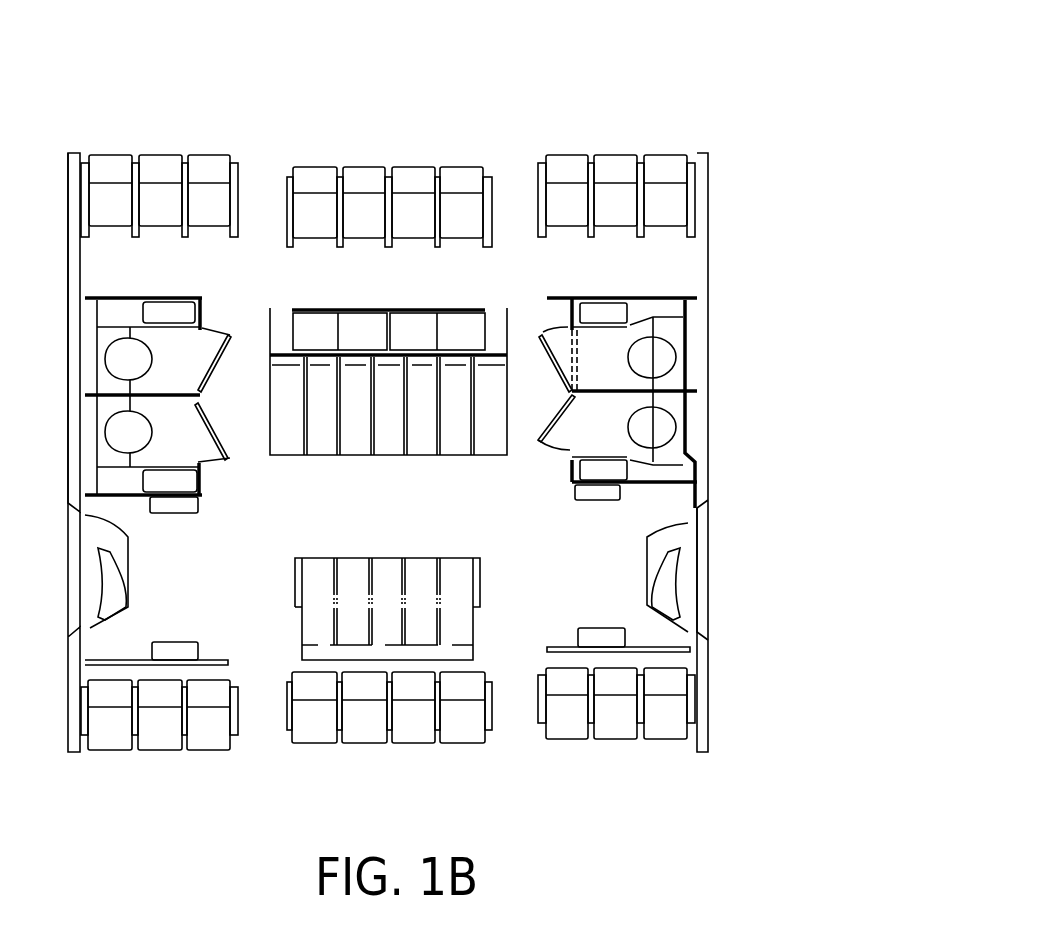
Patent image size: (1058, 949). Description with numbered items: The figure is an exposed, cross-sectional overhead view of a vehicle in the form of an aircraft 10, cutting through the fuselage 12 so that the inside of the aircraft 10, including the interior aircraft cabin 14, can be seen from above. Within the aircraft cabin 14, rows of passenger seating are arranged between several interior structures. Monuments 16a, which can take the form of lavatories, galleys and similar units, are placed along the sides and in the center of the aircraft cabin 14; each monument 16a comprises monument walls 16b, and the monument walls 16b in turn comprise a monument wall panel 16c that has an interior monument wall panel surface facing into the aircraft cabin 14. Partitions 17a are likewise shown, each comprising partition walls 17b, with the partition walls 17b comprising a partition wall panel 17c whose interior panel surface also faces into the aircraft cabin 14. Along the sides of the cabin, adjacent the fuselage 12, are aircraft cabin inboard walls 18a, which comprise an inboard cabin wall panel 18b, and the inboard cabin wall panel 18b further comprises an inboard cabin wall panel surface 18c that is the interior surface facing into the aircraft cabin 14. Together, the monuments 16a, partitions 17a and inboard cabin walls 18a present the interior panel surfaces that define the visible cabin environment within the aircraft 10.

The aircraft 10 is at (628, 102).
The fuselage 12 is at (708, 198).
The aircraft cabin 14 is at (402, 268).
The monuments 16a is at (195, 360).
The monument walls 16b is at (202, 293).
The monument wall panel 16c is at (153, 295).
The partitions 17a is at (228, 662).
The partition walls 17b is at (123, 658).
The partition wall panel 17c is at (208, 660).
The aircraft cabin inboard walls 18a is at (700, 477).
The inboard cabin wall panel 18b is at (690, 494).
The inboard cabin wall panel surface 18c is at (696, 263).